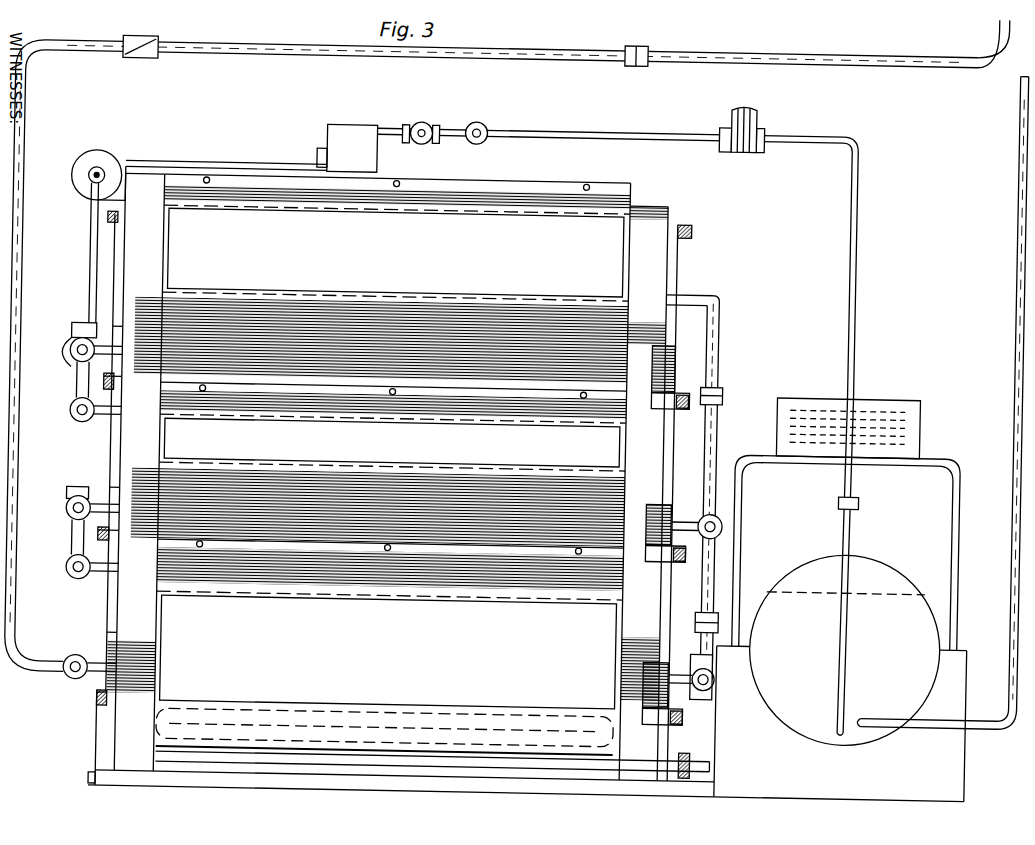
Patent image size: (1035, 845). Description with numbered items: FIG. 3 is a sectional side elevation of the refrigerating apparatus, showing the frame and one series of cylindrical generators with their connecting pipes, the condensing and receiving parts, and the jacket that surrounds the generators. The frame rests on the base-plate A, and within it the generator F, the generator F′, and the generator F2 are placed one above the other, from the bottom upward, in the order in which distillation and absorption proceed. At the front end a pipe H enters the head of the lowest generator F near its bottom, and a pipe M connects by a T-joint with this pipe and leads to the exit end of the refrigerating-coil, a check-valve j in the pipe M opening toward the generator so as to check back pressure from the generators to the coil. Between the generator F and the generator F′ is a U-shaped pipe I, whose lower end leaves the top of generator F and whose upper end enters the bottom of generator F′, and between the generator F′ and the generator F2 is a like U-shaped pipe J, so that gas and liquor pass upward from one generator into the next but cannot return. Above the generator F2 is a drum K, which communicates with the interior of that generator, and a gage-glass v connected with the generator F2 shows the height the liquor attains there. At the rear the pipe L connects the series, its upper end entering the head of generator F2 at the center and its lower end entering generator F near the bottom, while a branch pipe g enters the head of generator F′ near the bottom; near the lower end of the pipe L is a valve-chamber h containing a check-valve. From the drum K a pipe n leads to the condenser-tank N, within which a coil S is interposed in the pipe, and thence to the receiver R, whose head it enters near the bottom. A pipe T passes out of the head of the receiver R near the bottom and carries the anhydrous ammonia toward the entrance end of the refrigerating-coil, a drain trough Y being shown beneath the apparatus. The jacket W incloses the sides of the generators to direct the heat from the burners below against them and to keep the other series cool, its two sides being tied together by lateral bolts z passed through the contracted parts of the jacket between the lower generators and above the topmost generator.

The pipe M is at (256, 50).
The check-valve j is at (133, 66).
The drum K is at (322, 134).
The pipe n is at (549, 131).
The jacket W is at (392, 458).
The lateral bolt z is at (397, 366).
The generator F2 is at (127, 265).
The gage-glass v is at (87, 301).
The U-shaped pipe J is at (75, 404).
The generator F' is at (120, 432).
The U-shaped pipe I is at (72, 550).
The generator F is at (115, 582).
The pipe H is at (95, 688).
The base-plate A is at (107, 781).
The pipe L is at (713, 426).
The branch pipe g is at (702, 511).
The valve-chamber h is at (699, 665).
The condenser-tank N is at (848, 417).
The coil S is at (906, 421).
The receiver R is at (821, 556).
The pipe T is at (943, 402).
The drain trough Y is at (385, 726).